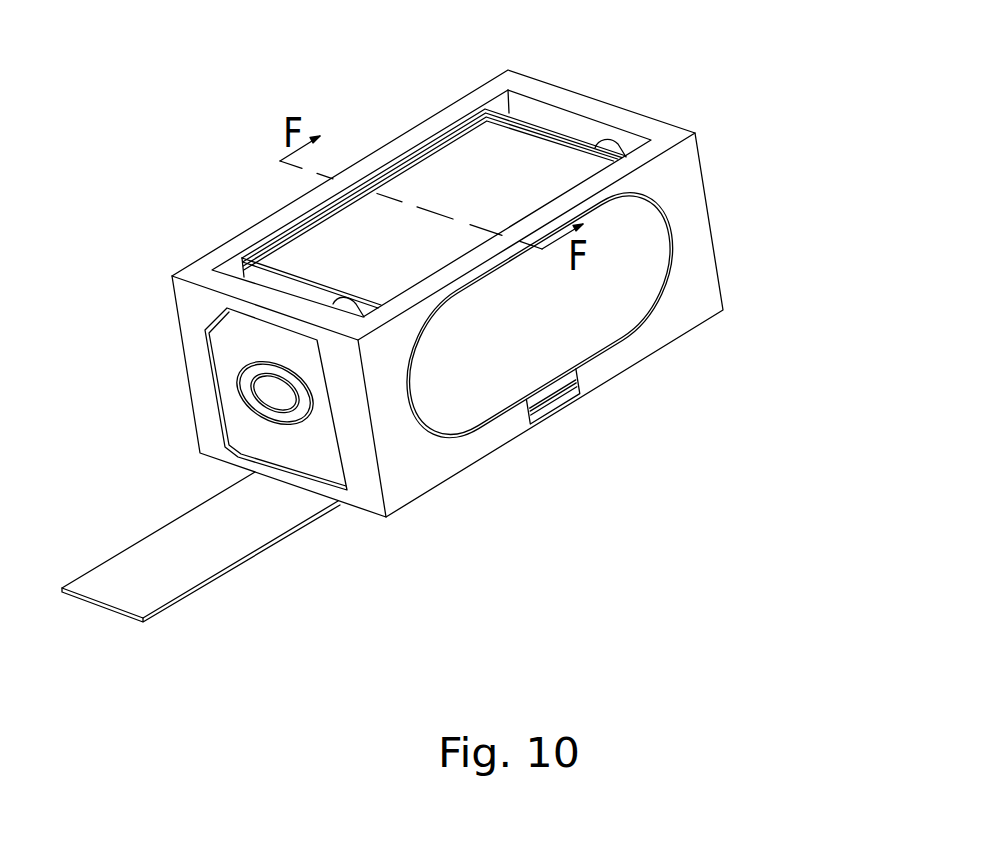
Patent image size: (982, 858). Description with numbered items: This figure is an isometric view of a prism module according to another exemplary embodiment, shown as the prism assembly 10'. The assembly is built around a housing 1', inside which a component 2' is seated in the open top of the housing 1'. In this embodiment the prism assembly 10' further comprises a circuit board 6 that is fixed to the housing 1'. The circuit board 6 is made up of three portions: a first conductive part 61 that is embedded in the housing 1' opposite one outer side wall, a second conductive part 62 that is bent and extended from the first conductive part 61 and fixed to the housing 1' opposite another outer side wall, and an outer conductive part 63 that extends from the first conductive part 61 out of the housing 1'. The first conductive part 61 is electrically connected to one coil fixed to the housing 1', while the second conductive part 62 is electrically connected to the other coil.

The prism assembly 10' is at (418, 276).
The housing 1' is at (447, 245).
The lens/filter stack 2' is at (434, 194).
The circuit board 6 is at (732, 473).
The first conductive part 61 is at (560, 398).
The second conductive part 62 is at (612, 298).
The outer conductive part 63 is at (248, 528).